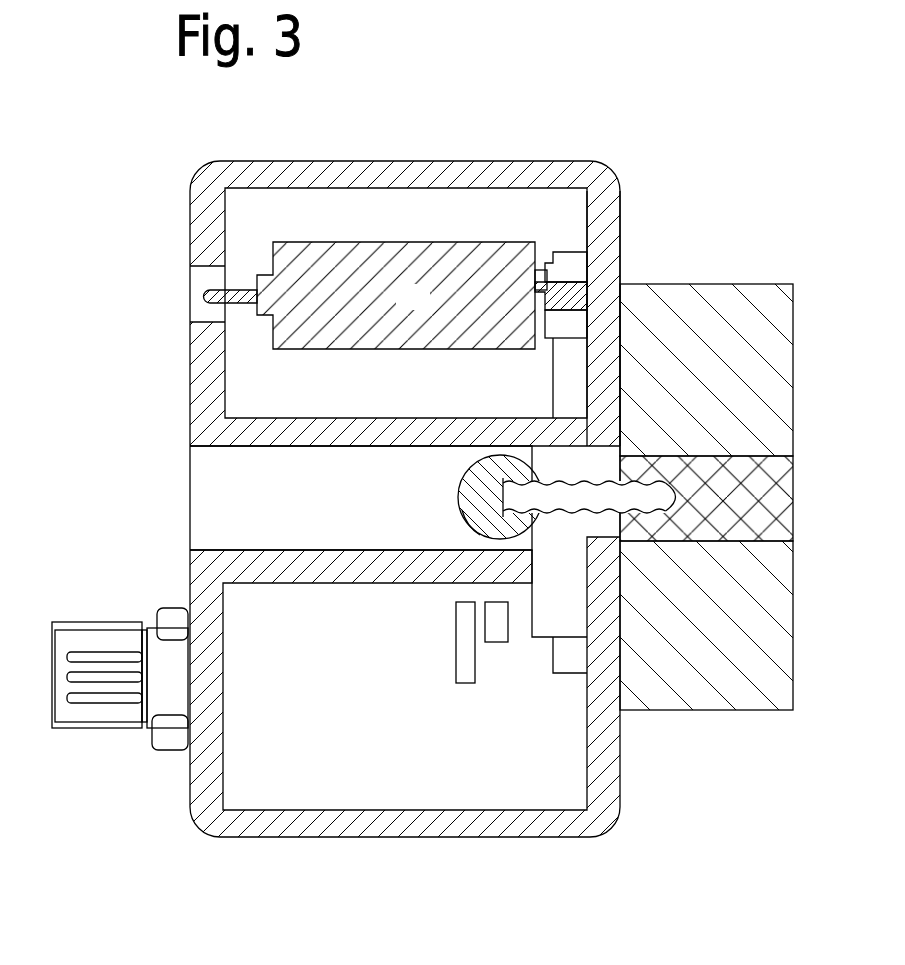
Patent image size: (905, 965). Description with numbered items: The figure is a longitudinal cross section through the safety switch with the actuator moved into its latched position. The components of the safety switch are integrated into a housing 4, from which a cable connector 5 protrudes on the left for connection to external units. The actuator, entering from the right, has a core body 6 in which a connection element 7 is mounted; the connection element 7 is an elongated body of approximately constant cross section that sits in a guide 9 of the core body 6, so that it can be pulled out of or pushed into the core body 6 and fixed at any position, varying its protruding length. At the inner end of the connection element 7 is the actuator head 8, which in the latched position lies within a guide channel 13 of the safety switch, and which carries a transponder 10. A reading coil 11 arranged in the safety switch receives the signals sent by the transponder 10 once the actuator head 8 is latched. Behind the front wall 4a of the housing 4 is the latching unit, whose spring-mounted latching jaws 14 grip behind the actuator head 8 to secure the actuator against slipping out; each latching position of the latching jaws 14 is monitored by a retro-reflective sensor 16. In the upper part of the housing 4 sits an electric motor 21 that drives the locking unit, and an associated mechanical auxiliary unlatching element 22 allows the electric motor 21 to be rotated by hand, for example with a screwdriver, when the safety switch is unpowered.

The housing 4 is at (385, 160).
The front wall 4a is at (620, 210).
The cable connector 5 is at (71, 730).
The core body 6 is at (790, 338).
The connection element 7 is at (678, 500).
The actuator head 8 is at (464, 519).
The guide 9 is at (780, 500).
The transponder 10 is at (462, 481).
The reading coil 11 is at (456, 632).
The guide channel 13 is at (218, 495).
The latching jaw 14 is at (572, 570).
The retro-reflective sensor 16 is at (497, 643).
The electric motor 21 is at (429, 308).
The auxiliary unlatching element 22 is at (178, 300).